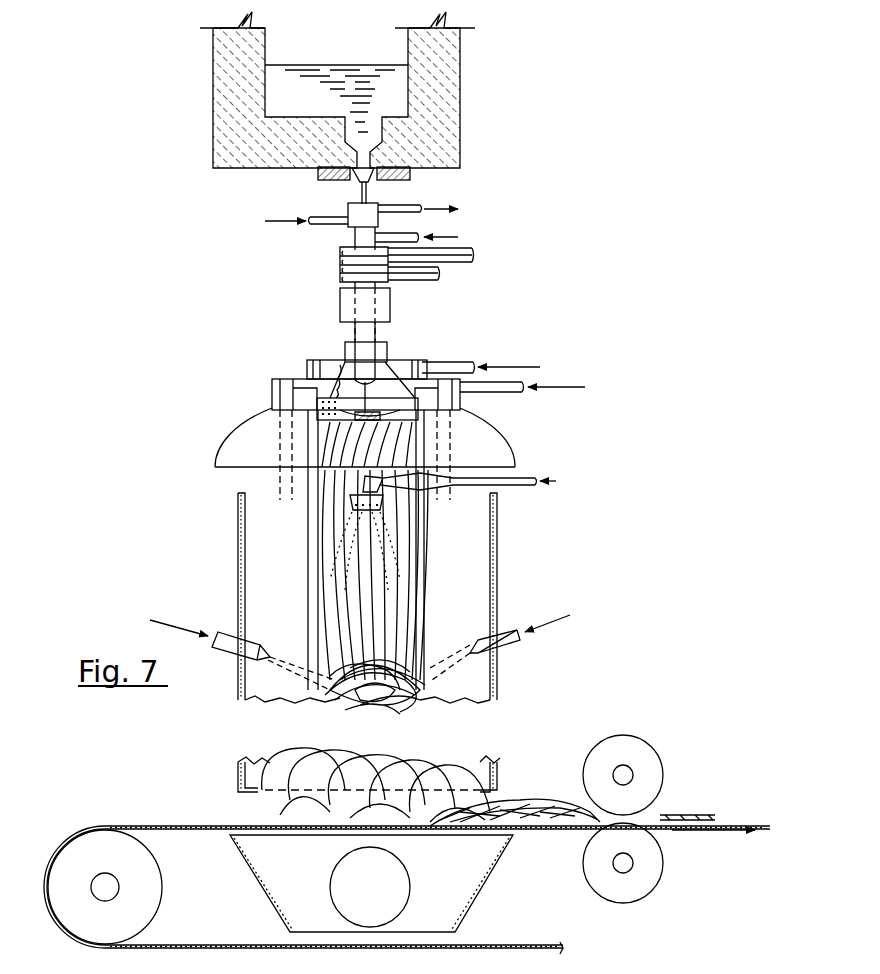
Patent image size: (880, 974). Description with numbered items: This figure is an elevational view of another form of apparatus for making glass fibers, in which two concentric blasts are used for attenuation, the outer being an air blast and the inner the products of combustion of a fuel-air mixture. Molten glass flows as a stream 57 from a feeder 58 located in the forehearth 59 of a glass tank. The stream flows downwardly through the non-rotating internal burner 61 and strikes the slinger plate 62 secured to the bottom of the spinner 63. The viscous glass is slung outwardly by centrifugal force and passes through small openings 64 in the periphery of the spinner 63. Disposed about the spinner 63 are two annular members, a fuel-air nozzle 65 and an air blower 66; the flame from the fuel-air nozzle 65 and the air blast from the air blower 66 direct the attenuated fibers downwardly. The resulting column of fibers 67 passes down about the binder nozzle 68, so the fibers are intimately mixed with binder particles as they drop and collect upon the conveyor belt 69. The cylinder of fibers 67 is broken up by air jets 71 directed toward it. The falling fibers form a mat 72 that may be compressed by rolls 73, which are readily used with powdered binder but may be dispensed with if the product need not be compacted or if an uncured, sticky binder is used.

The stream 57 is at (360, 192).
The feeder 58 is at (372, 180).
The forehearth 59 is at (458, 60).
The non-rotating internal burner 61 is at (388, 357).
The slinger plate 62 is at (455, 420).
The spinner 63 is at (395, 360).
The small openings 64 is at (332, 422).
The fuel-air nozzle 65 is at (313, 366).
The air blower 66 is at (272, 392).
The column of fibers 67 is at (420, 522).
The binder nozzle 68 is at (360, 512).
The conveyor belt 69 is at (156, 825).
The air jets 71 is at (228, 632).
The mat 72 is at (584, 797).
The rolls 73 is at (663, 772).